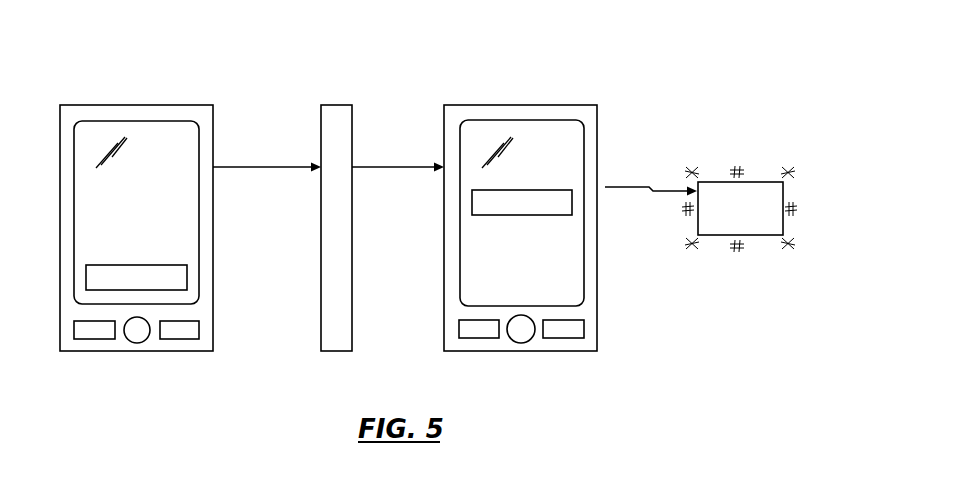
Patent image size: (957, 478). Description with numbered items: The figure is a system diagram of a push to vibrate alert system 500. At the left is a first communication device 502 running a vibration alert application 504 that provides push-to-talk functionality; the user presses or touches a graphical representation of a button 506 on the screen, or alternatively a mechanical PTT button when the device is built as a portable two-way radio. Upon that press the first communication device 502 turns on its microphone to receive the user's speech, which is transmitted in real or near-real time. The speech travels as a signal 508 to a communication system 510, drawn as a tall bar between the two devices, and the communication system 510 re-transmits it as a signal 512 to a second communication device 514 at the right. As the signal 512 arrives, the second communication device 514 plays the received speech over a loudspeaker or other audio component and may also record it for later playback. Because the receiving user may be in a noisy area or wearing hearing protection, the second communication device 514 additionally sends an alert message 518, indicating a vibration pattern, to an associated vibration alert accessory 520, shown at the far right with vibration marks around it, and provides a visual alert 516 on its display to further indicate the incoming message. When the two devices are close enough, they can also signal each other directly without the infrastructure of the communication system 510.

The push to vibrate alert system 500 is at (430, 55).
The first communication device 502 is at (136, 243).
The vibration alert application 504 is at (137, 174).
The graphical representation of a button 506 is at (126, 265).
The signal 508 is at (280, 165).
The communication system 510 is at (335, 105).
The signal 512 is at (418, 168).
The second communication device 514 is at (520, 213).
The visual alert 516 is at (520, 215).
The alert message 518 is at (650, 186).
The vibration accessory 520 is at (760, 182).